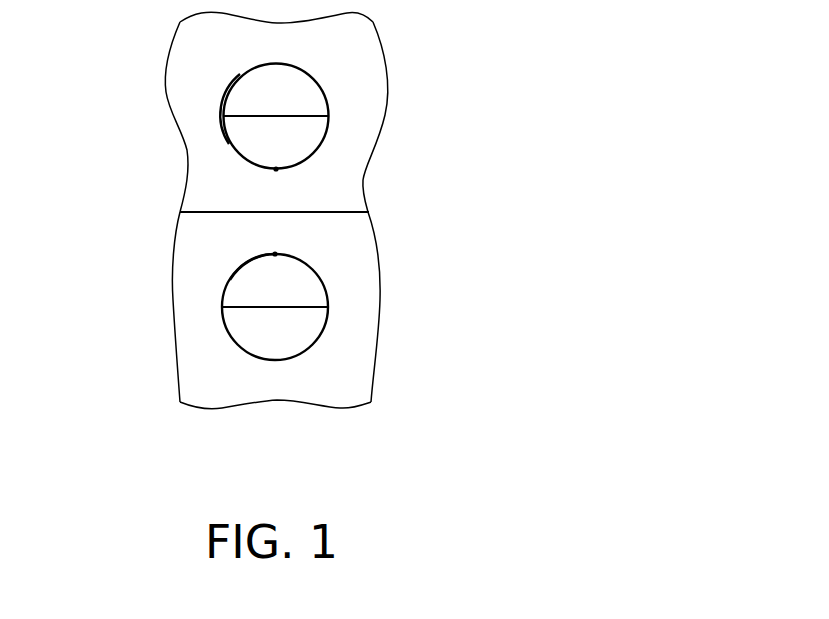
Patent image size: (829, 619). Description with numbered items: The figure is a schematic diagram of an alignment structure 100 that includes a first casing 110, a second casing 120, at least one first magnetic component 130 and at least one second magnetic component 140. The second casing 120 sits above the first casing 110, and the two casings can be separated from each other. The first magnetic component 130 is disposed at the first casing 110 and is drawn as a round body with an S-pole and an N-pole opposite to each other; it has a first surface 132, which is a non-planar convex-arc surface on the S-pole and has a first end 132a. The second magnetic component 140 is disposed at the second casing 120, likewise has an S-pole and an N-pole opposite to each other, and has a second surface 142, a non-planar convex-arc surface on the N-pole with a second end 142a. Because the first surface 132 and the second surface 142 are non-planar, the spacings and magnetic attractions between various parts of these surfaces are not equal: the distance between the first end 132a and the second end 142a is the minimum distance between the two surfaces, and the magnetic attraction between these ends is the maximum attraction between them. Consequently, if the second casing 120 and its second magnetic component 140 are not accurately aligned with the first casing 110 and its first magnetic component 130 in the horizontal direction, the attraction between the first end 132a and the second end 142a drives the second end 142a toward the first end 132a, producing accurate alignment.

The alignment structure 100 is at (296, 245).
The first casing 110 is at (357, 377).
The second casing 120 is at (365, 45).
The first magnetic component 130 is at (242, 334).
The first surface 132 is at (230, 280).
The first end 132a is at (275, 254).
The second magnetic component 140 is at (242, 89).
The second surface 142 is at (229, 144).
The second end 142a is at (276, 169).